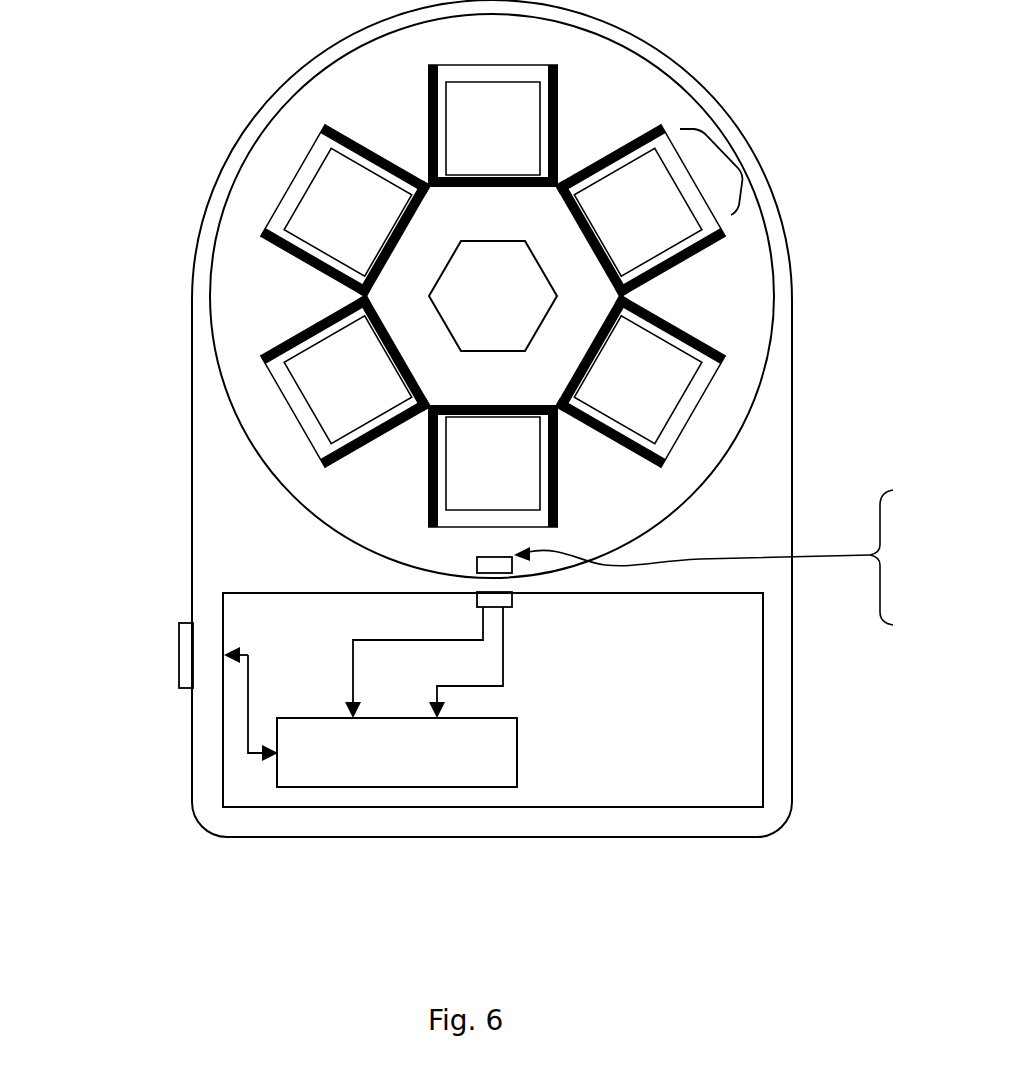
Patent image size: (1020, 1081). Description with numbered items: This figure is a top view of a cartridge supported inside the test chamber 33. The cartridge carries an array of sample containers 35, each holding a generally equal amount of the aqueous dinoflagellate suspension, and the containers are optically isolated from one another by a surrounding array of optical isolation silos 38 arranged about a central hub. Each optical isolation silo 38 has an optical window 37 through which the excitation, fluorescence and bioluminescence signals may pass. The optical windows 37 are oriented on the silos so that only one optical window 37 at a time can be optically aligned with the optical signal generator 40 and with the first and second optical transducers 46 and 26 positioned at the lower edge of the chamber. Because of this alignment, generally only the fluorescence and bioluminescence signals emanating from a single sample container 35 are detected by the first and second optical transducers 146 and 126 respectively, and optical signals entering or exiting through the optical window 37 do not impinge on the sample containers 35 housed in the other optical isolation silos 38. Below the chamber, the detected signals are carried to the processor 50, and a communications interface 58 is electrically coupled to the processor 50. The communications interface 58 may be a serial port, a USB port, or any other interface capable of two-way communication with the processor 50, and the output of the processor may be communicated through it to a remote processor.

The second optical transducer 26 is at (562, 418).
The test chamber 33 is at (272, 309).
The sample container 35 is at (508, 478).
The optical window 37 is at (720, 170).
The optical isolation silo 38 is at (687, 337).
The optical signal generator 40 is at (723, 557).
The first optical transducer 46 is at (704, 558).
The processor 50 is at (280, 780).
The communications interface 58 is at (179, 657).
The second optical transducer 126 is at (414, 662).
The first optical transducer 146 is at (466, 662).